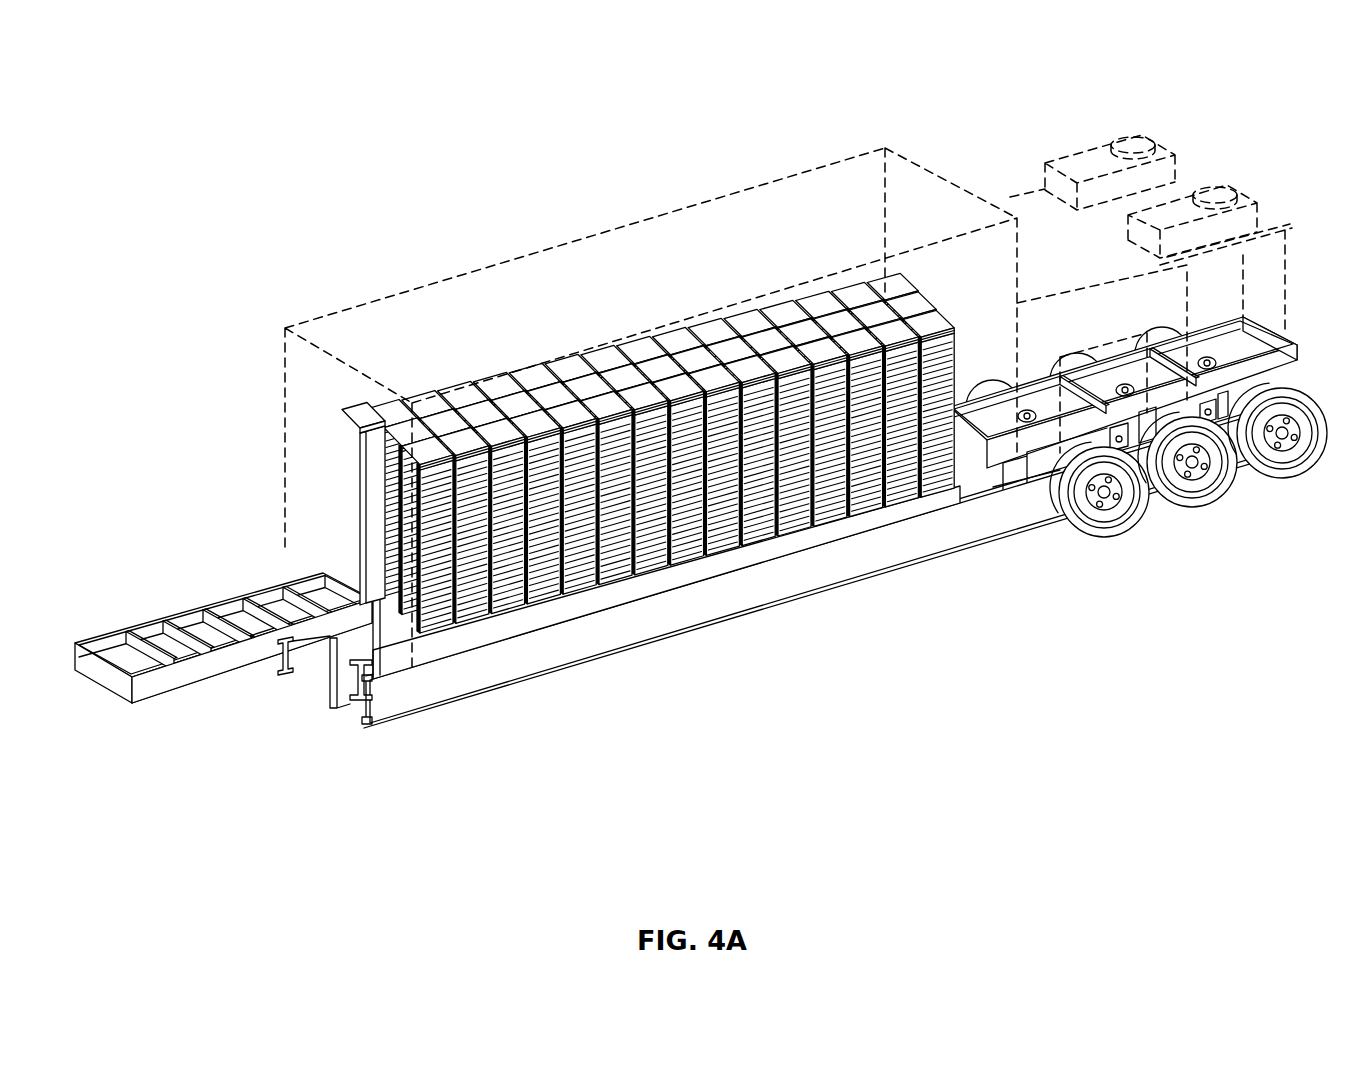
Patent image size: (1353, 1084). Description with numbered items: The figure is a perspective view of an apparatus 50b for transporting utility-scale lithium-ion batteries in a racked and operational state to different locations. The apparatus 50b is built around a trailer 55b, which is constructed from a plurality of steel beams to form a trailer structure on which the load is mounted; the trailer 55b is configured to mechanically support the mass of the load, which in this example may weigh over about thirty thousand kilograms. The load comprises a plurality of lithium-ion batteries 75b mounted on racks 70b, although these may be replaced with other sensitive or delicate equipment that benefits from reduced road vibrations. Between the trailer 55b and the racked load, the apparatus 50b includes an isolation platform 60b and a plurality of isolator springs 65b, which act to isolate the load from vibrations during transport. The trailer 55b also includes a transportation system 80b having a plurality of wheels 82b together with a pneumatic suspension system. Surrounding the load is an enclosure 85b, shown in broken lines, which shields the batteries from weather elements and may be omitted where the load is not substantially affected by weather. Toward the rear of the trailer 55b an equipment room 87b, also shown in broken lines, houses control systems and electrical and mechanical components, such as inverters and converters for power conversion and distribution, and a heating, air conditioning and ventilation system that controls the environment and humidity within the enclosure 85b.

The apparatus 50b is at (703, 471).
The trailer 55b is at (1310, 342).
The isolation platform 60b is at (355, 583).
The isolator springs 65b is at (446, 637).
The racks 70b is at (920, 290).
The lithium-ion batteries 75b is at (432, 517).
The transportation system 80b is at (1191, 527).
The wheels 82b is at (1287, 466).
The enclosure 85b is at (527, 252).
The equipment room 87b is at (1190, 173).